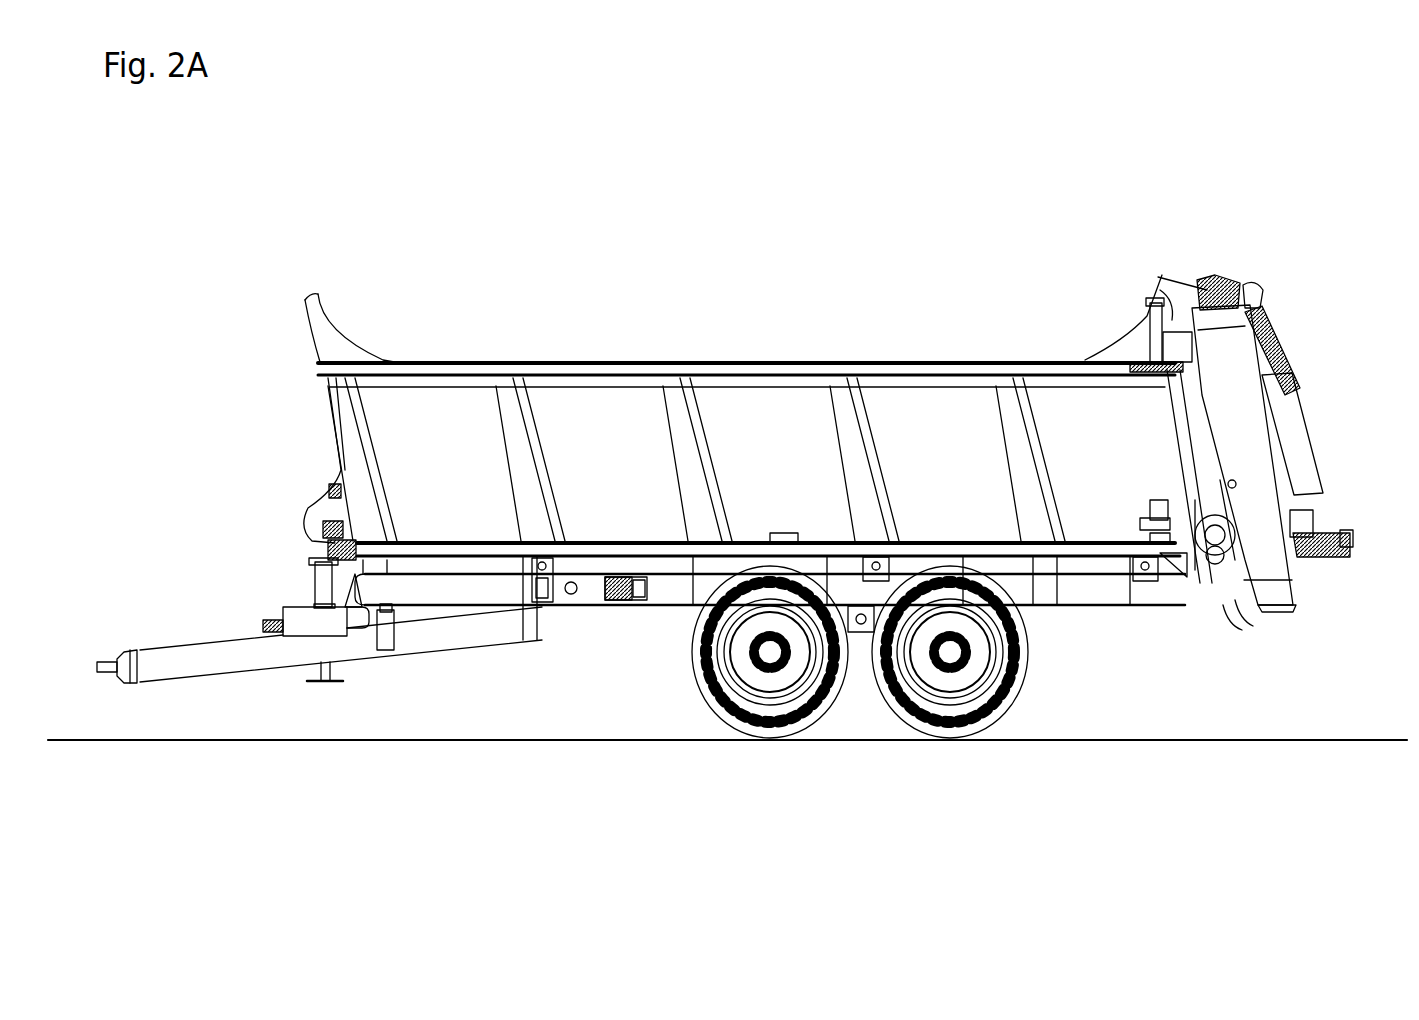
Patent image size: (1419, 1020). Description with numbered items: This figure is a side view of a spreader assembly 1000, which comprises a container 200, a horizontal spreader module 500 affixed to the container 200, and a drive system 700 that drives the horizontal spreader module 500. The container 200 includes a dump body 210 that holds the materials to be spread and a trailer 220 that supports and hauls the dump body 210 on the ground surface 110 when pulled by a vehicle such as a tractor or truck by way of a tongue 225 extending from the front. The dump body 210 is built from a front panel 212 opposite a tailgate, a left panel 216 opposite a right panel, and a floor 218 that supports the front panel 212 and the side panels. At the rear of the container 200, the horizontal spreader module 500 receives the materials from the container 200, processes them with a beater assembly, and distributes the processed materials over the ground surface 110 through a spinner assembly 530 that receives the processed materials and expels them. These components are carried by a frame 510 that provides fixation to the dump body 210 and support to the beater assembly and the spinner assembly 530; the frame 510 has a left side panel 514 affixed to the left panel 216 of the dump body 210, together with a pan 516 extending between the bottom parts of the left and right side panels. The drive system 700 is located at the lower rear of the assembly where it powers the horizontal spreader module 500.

The ground surface 110 is at (1282, 739).
The container 200 is at (1172, 724).
The dump body 210 is at (752, 243).
The front panel 212 is at (330, 427).
The left panel 216 is at (802, 440).
The floor 218 is at (600, 552).
The trailer 220 is at (653, 602).
The tongue 225 is at (250, 680).
The horizontal spreader module 500 is at (1385, 727).
The frame 510 is at (1228, 266).
The left side panel 514 is at (1262, 433).
The pan 516 is at (1283, 598).
The spinner assembly 530 is at (1318, 517).
The drive system 700 is at (1208, 603).
The spreader assembly 1000 is at (1415, 829).